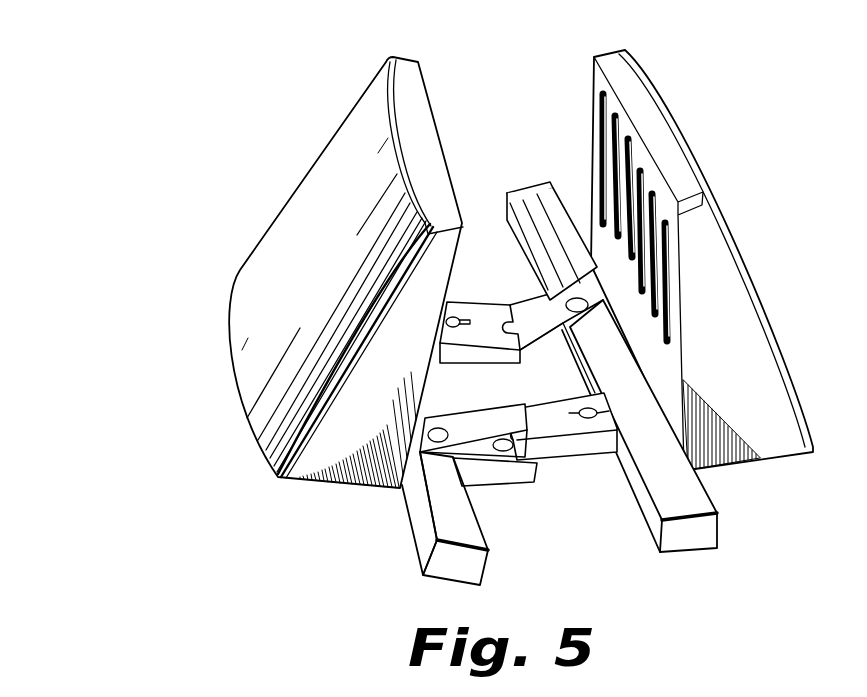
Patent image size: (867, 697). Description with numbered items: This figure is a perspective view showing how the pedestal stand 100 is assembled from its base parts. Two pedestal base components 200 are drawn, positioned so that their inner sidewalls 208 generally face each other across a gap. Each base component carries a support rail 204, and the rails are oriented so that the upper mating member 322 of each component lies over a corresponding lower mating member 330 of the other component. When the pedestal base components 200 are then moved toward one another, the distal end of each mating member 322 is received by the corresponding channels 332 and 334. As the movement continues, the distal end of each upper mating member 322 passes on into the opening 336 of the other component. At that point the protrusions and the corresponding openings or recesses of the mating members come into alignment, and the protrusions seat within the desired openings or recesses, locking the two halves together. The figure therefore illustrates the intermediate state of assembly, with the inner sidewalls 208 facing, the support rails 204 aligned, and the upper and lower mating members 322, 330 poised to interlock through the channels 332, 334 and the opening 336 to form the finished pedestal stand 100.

The pedestal stand 100 is at (168, 174).
The pedestal base components 200 is at (420, 125).
The support rails 204 is at (441, 506).
The inner sidewalls 208 is at (596, 235).
The upper mating member 322 is at (490, 300).
The lower mating member 330 is at (547, 340).
The channel 332 is at (433, 415).
The channel 334 is at (527, 192).
The opening 336 is at (612, 310).